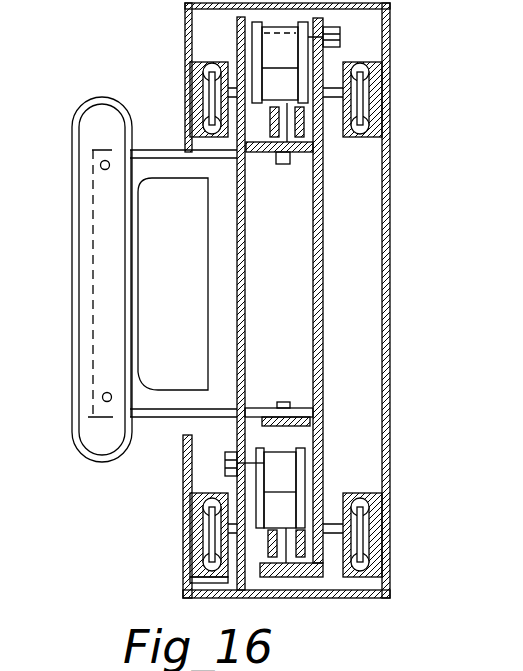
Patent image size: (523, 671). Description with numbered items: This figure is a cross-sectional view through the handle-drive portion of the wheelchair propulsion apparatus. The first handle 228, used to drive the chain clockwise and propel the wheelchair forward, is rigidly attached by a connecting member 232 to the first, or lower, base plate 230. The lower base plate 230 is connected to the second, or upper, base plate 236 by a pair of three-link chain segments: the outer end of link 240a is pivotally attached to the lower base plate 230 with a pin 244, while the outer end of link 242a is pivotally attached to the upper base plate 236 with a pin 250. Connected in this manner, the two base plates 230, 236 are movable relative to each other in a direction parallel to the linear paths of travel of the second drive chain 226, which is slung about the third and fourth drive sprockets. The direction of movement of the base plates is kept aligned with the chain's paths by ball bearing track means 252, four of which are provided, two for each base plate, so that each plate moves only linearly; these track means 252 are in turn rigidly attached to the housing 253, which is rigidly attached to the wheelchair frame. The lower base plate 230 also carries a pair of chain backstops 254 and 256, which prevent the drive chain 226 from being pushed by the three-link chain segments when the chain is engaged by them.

The second drive chain 226 is at (288, 167).
The first handle 228 is at (90, 447).
The first base plate 230 is at (315, 248).
The connecting member 232 is at (164, 150).
The second base plate 236 is at (237, 272).
The link of three-link chain segment 240a is at (252, 65).
The link of three-link chain segment 242a is at (252, 492).
The pin 244 is at (340, 40).
The pin 250 is at (225, 461).
The ball bearing track means 252 is at (185, 70).
The housing 253 is at (380, 288).
The chain backstop 254 is at (250, 155).
The chain backstop 256 is at (272, 578).